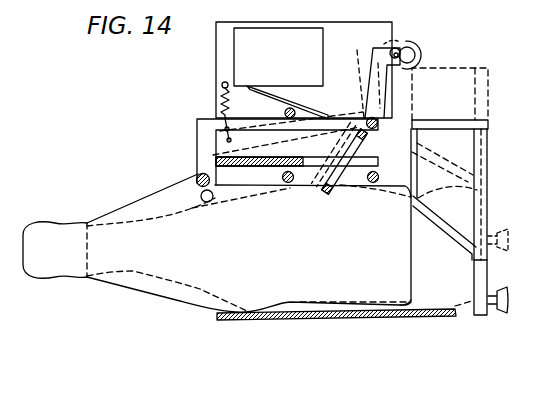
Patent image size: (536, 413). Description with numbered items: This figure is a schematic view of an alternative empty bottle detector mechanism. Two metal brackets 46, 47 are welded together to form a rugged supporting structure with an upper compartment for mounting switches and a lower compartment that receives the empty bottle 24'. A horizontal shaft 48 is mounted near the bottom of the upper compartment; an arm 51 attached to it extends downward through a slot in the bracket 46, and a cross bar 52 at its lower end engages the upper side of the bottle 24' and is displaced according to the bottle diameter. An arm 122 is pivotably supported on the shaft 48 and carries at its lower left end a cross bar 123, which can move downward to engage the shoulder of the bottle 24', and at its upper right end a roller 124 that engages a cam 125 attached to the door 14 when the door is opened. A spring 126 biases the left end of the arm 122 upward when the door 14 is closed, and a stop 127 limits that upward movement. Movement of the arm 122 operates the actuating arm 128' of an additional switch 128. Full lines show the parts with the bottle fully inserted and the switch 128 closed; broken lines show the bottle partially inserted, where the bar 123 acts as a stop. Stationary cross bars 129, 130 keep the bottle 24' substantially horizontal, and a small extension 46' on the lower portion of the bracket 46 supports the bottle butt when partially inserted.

The door 14 is at (492, 153).
The empty bottle 24' is at (247, 243).
The bracket 46 is at (297, 155).
The extension 46' is at (336, 323).
The bracket 47 is at (393, 22).
The shaft 48 is at (378, 121).
The arm 51 is at (358, 138).
The cross bar 52 is at (337, 155).
The arm 122 is at (196, 120).
The cross bar 123 is at (201, 176).
The roller 124 is at (421, 50).
The cam 125 is at (455, 119).
The spring 126 is at (222, 100).
The stop 127 is at (288, 112).
The switch 128 is at (298, 43).
The actuating arm 128' is at (288, 120).
The stationary cross bar 129 is at (283, 177).
The stationary cross bar 130 is at (378, 177).